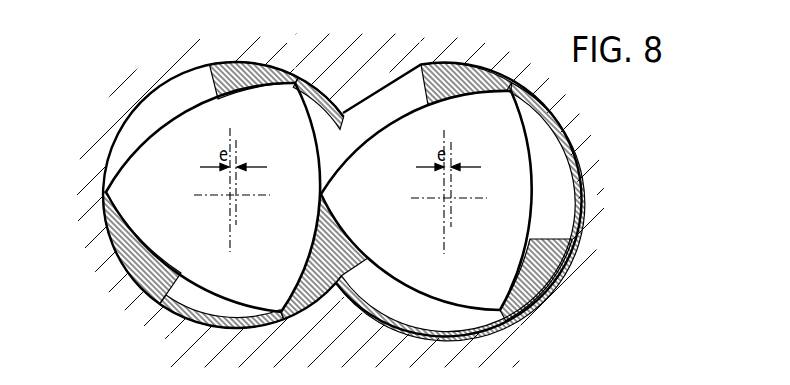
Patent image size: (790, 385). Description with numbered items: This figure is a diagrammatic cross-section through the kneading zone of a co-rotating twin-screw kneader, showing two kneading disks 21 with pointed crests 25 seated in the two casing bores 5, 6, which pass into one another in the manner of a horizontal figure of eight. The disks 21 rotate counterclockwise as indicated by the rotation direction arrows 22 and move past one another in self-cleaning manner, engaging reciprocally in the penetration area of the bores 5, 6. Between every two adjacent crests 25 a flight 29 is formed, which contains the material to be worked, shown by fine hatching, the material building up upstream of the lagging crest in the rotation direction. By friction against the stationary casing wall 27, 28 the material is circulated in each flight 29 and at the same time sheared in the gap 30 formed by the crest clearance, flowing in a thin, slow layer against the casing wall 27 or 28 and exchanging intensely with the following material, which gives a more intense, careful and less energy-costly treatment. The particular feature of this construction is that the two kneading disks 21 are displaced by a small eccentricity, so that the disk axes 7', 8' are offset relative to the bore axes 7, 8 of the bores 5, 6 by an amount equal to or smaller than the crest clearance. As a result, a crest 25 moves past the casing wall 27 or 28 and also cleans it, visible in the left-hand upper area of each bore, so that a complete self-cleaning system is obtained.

The flight 29 is at (143, 122).
The casing wall 28 is at (150, 101).
The casing wall 27 is at (368, 107).
The gap 30 is at (291, 78).
The rotation direction arrows 22 is at (160, 160).
The kneading disk 21 is at (283, 278).
The bore 6 is at (103, 245).
The bore 5 is at (580, 255).
The crest 25 is at (108, 192).
The axis of bore 8 is at (232, 184).
The displaced axis of kneading disk 8' is at (215, 190).
The axis of bore 7 is at (449, 185).
The displaced axis of kneading disk 7' is at (432, 192).